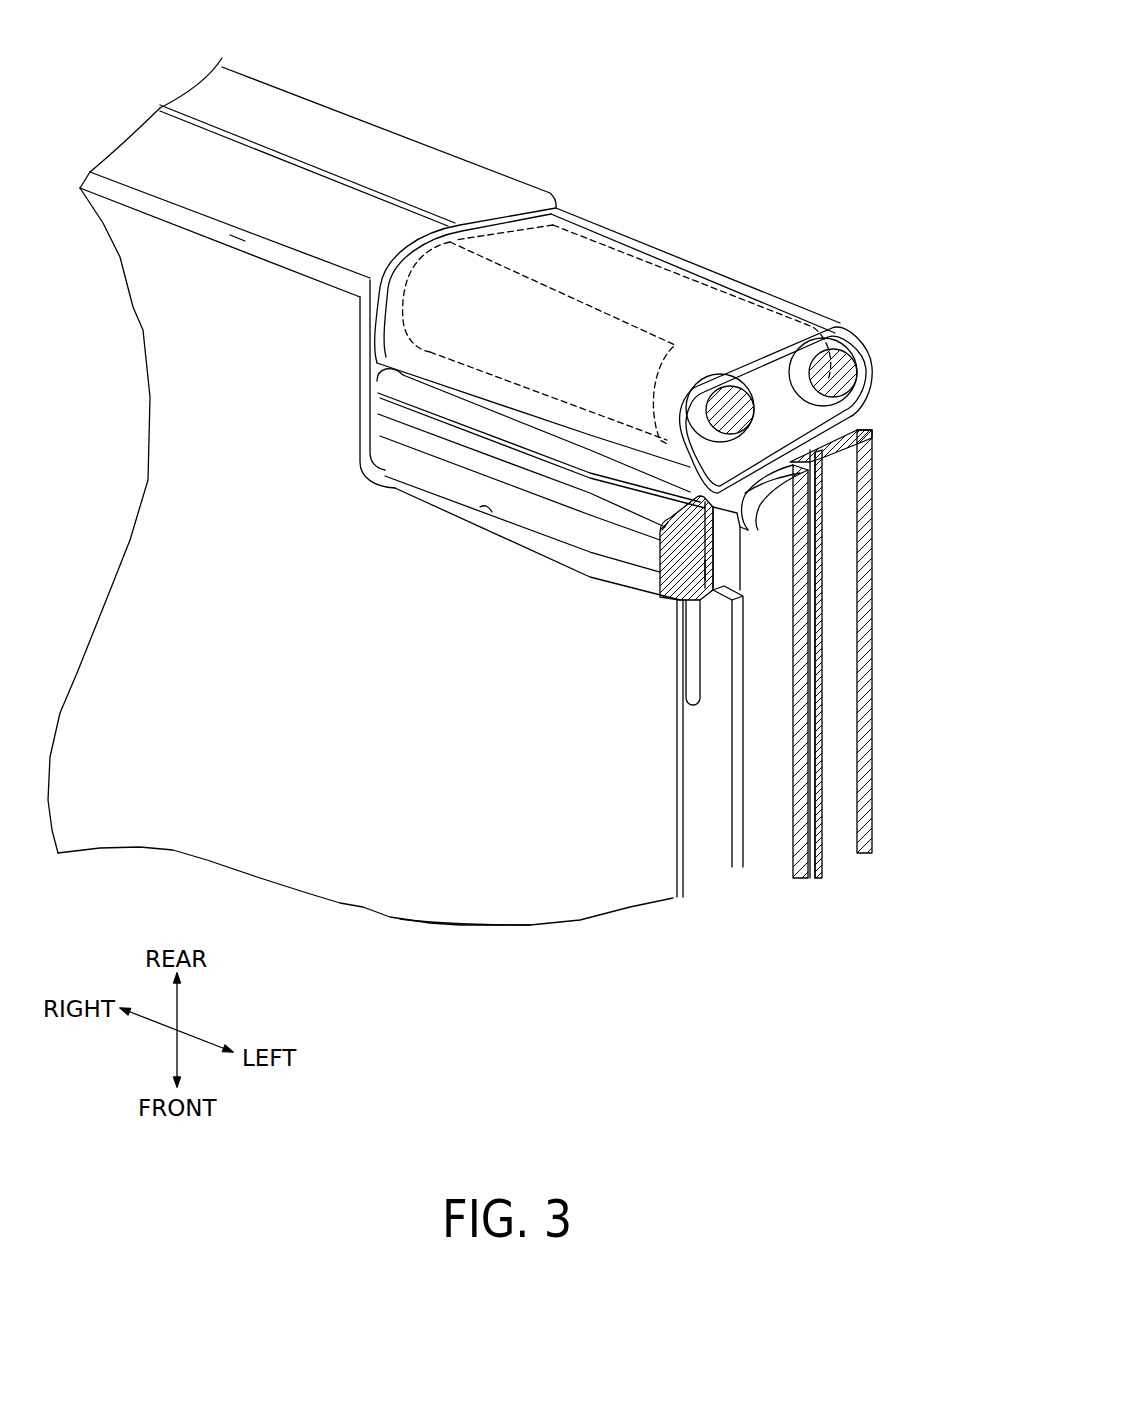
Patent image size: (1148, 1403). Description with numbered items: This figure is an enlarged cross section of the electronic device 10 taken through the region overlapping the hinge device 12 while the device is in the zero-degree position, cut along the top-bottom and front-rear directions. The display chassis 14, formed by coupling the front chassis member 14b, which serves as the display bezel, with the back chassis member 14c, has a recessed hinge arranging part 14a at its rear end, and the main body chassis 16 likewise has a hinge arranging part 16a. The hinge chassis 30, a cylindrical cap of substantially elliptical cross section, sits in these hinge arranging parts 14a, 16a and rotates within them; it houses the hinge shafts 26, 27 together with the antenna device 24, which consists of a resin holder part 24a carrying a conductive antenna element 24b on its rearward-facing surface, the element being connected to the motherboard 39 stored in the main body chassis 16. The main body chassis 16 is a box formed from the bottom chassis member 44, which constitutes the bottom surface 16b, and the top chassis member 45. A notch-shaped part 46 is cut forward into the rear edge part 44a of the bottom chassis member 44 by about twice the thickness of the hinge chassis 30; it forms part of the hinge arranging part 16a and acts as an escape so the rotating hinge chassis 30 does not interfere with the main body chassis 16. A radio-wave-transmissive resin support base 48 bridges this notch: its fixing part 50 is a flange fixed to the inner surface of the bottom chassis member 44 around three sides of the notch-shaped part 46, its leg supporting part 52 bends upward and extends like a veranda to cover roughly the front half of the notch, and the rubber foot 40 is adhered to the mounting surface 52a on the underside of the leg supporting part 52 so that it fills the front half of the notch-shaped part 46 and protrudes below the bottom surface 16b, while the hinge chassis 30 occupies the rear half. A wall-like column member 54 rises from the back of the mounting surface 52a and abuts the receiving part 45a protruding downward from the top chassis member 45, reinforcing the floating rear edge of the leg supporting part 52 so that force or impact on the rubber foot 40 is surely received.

The electronic device 10 is at (82, 26).
The hinge device 12 is at (763, 247).
The display chassis 14 is at (220, 103).
The hinge arranging part 14a is at (853, 420).
The front chassis member 14b is at (820, 765).
The back chassis member 14c is at (870, 702).
The main body chassis 16 is at (142, 143).
The hinge arranging part 16a is at (750, 492).
The bottom surface 16b is at (423, 893).
The antenna device 24 is at (640, 275).
The holder part 24a is at (617, 334).
The antenna element 24b is at (680, 290).
The hinge shaft 26 is at (737, 410).
The hinge shaft 27 is at (870, 350).
The hinge chassis 30 is at (563, 247).
The motherboard 39 is at (740, 812).
The rubber foot 40 is at (433, 475).
The bottom chassis member 44 is at (683, 820).
The rear edge part 44a is at (238, 240).
The top chassis member 45 is at (803, 810).
The receiving part 45a is at (737, 530).
The notch-shaped part 46 is at (487, 510).
The support base 48 is at (777, 513).
The fixing part 50 is at (700, 673).
The leg supporting part 52 is at (660, 578).
The mounting surface 52a is at (667, 557).
The column member 54 is at (720, 570).